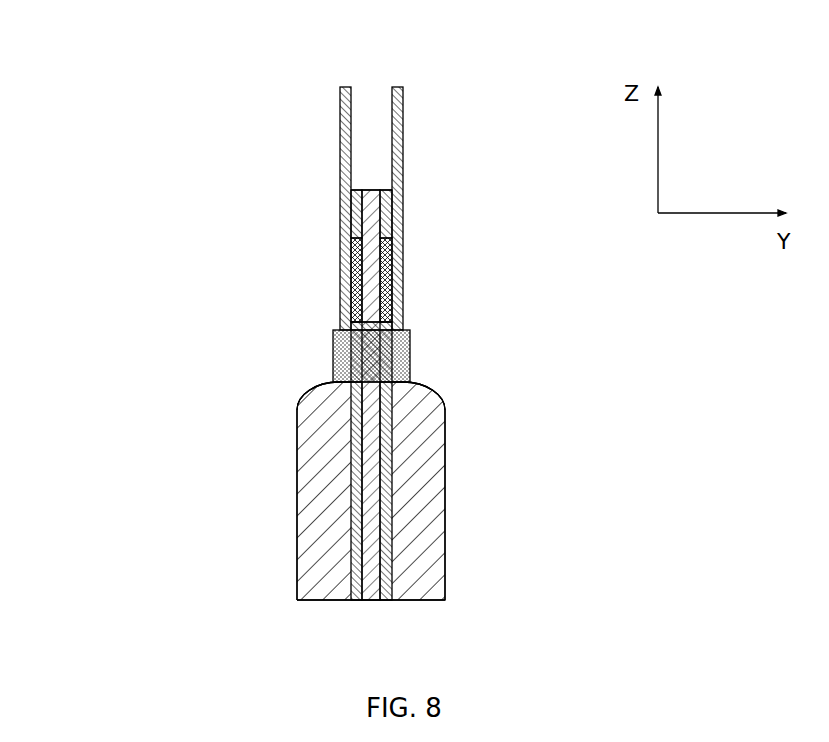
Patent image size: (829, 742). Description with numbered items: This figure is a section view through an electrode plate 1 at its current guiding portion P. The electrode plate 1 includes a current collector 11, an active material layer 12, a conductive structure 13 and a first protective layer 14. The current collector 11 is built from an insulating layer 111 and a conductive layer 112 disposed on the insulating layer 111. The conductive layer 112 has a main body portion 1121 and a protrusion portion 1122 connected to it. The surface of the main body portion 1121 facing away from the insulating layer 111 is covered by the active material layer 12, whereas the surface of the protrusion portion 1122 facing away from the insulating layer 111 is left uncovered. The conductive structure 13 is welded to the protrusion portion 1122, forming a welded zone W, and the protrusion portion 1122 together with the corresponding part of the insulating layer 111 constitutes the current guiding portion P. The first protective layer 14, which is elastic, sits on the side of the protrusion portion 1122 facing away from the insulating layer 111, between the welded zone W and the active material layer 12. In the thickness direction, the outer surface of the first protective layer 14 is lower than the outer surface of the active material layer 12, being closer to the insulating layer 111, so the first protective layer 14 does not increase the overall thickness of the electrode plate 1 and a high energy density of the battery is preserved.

The electrode plate 1 is at (120, 190).
The current collector 11 is at (140, 350).
The insulating layer 111 is at (350, 440).
The conductive layer 112 is at (205, 320).
The main body portion 1121 is at (305, 400).
The protrusion portion 1122 is at (333, 330).
The active material layer 12 is at (445, 440).
The conductive structure 13 is at (343, 192).
The first protective layer 14 is at (410, 350).
The welded zone W is at (403, 258).
The current guiding portion P is at (372, 185).